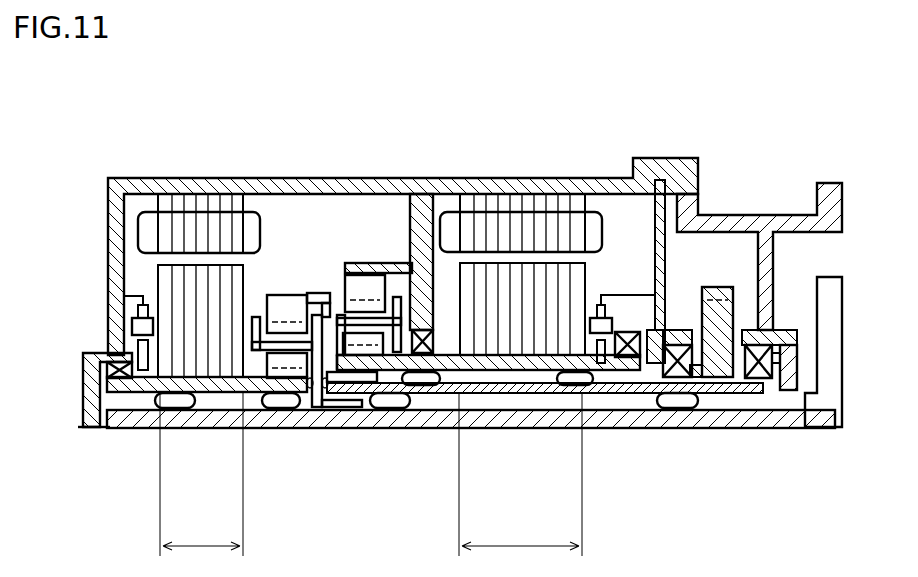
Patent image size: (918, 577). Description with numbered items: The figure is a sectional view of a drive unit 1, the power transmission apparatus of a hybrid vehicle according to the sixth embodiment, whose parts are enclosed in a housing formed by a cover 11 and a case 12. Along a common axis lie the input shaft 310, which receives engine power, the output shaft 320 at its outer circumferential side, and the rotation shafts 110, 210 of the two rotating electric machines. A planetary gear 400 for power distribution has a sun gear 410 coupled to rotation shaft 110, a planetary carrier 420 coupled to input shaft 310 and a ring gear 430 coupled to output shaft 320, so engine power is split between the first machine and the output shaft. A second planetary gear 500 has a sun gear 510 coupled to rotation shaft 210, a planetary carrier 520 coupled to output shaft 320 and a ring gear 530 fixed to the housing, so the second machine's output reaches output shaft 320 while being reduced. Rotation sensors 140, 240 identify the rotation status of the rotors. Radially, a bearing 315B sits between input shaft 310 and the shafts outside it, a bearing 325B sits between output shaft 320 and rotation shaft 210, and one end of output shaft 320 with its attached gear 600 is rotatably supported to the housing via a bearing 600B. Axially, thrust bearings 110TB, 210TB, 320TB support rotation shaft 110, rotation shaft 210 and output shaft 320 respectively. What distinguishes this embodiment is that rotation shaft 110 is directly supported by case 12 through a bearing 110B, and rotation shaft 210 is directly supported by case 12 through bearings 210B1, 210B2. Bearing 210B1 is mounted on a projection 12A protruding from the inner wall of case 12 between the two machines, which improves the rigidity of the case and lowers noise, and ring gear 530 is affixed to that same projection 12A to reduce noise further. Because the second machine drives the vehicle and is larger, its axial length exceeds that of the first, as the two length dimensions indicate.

The drive unit 1 is at (108, 94).
The cover 11 is at (838, 219).
The case 12 is at (297, 184).
The projection 12A is at (372, 300).
The rotation shaft 110 is at (216, 386).
The bearing 110B is at (120, 378).
The thrust bearing 110TB is at (310, 400).
The rotation sensor 140 is at (132, 326).
The rotation shaft 210 is at (520, 372).
The bearing 210B1 is at (487, 372).
The bearing 210B2 is at (637, 372).
The thrust bearing 210TB is at (337, 315).
The rotation sensor 240 is at (596, 335).
The input shaft 310 is at (778, 420).
The bearing 315B is at (281, 402).
The output shaft 320 is at (728, 393).
The thrust bearing 320TB is at (331, 395).
The bearing 325B is at (423, 387).
The planetary gear 400 is at (263, 130).
The sun gear 410 is at (264, 371).
The planetary carrier 420 is at (284, 343).
The ring gear 430 is at (283, 296).
The planetary gear 500 is at (540, 128).
The sun gear 510 is at (408, 345).
The planetary carrier 520 is at (386, 340).
The ring gear 530 is at (366, 333).
The gear 600 is at (722, 318).
The bearing 600B is at (766, 361).